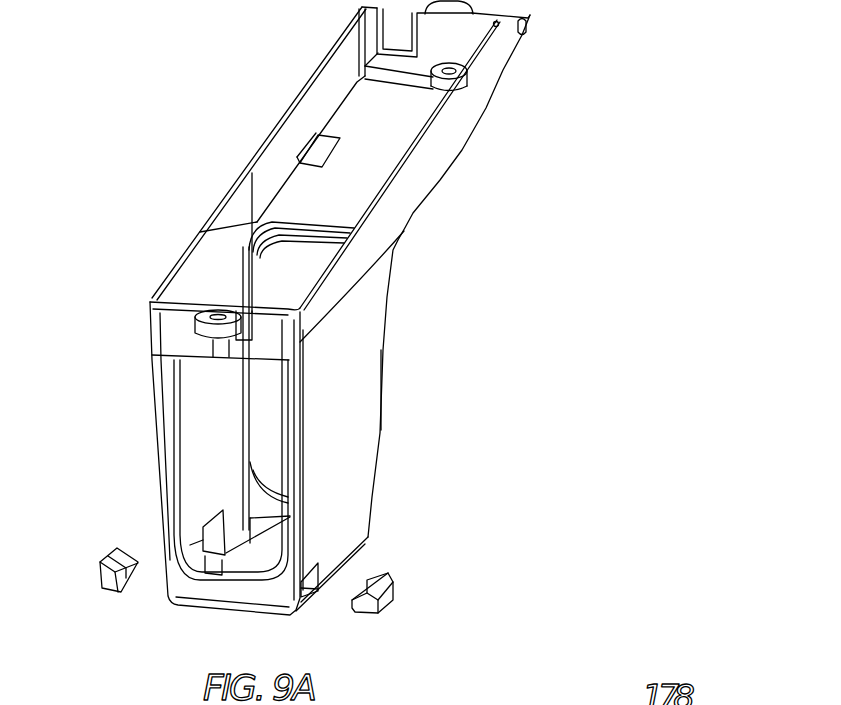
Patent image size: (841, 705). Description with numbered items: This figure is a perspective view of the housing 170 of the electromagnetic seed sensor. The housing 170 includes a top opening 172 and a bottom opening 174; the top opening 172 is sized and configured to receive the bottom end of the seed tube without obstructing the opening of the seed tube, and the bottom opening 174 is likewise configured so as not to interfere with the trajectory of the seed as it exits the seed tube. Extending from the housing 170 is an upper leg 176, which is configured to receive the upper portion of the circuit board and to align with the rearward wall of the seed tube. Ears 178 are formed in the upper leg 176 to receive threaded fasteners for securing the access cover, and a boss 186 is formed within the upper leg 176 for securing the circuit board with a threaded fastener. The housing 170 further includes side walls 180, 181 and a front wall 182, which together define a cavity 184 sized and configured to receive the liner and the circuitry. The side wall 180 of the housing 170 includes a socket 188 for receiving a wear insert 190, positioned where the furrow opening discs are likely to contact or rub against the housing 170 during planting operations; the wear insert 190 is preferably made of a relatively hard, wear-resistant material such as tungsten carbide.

The housing 170 is at (123, 157).
The top opening 172 is at (290, 274).
The bottom opening 174 is at (189, 430).
The upper leg 176 is at (453, 134).
The ears 178 is at (197, 323).
The side wall 180 is at (197, 395).
The side wall 181 is at (360, 412).
The front wall 182 is at (198, 615).
The cavity 184 is at (213, 292).
The boss 186 is at (462, 60).
The socket 188 is at (302, 594).
The wear insert 190 is at (375, 567).